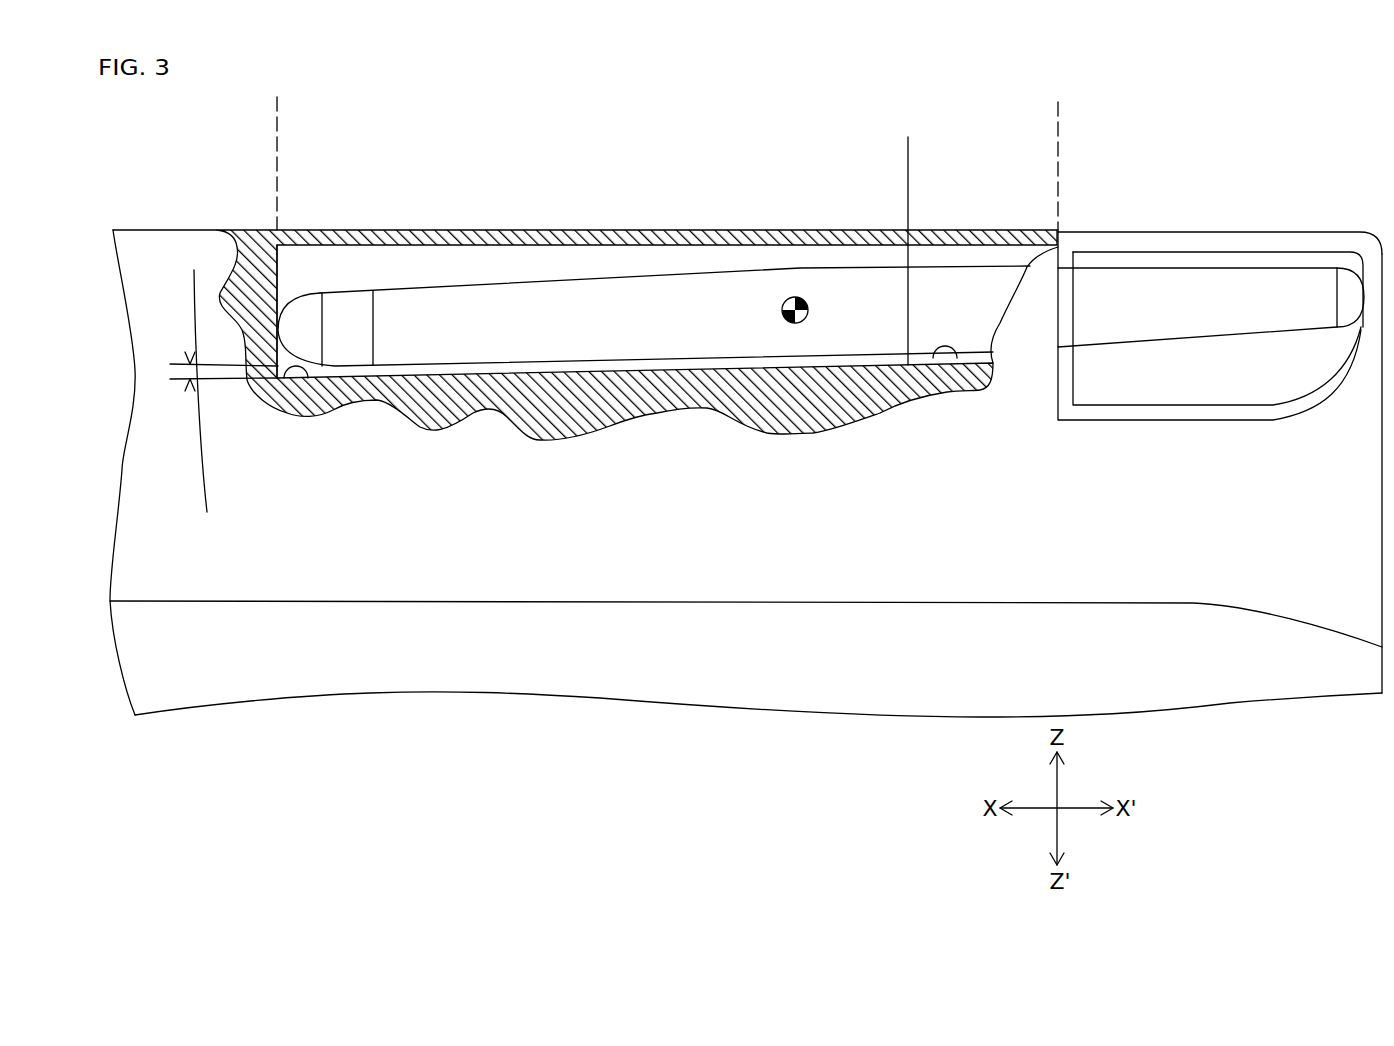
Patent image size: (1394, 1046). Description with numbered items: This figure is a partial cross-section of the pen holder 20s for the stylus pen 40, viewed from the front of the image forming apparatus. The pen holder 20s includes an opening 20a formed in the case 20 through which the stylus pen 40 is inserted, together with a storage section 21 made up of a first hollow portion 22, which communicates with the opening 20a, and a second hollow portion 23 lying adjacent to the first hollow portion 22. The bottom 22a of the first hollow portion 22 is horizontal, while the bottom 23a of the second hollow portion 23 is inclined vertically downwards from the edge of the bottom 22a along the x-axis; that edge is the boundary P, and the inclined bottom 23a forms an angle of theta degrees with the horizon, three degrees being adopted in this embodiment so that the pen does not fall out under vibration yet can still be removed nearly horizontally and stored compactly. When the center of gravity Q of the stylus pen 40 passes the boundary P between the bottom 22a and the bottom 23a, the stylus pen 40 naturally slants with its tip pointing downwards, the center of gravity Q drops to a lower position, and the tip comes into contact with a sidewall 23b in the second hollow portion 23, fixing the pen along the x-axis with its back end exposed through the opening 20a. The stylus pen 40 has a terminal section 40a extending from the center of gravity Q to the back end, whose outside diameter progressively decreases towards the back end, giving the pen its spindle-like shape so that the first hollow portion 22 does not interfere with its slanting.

The case 20 is at (1017, 567).
The opening 20a is at (1082, 231).
The pen holder 20s is at (1069, 120).
The storage section 21 is at (277, 99).
The first hollow portion 22 is at (910, 147).
The bottom of the first hollow portion 22a is at (965, 393).
The second hollow portion 23 is at (277, 147).
The bottom of the second hollow portion 23a is at (279, 393).
The sidewall 23b is at (280, 279).
The stylus pen 40 is at (1121, 278).
The terminal section 40a is at (1123, 325).
The boundary P is at (895, 385).
The center of gravity Q is at (793, 323).